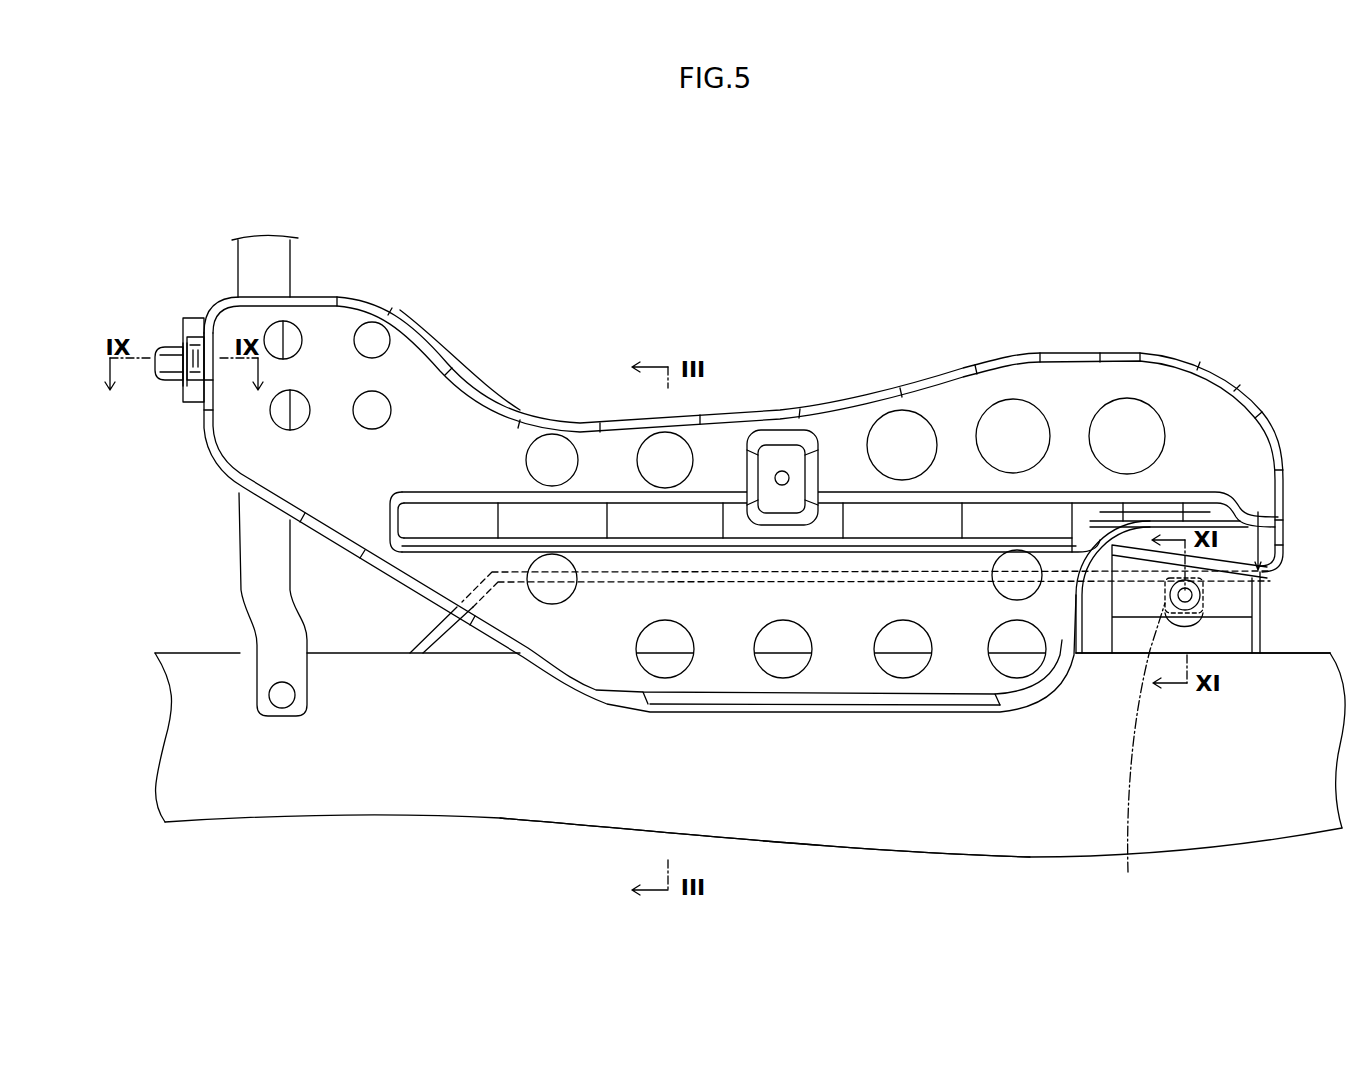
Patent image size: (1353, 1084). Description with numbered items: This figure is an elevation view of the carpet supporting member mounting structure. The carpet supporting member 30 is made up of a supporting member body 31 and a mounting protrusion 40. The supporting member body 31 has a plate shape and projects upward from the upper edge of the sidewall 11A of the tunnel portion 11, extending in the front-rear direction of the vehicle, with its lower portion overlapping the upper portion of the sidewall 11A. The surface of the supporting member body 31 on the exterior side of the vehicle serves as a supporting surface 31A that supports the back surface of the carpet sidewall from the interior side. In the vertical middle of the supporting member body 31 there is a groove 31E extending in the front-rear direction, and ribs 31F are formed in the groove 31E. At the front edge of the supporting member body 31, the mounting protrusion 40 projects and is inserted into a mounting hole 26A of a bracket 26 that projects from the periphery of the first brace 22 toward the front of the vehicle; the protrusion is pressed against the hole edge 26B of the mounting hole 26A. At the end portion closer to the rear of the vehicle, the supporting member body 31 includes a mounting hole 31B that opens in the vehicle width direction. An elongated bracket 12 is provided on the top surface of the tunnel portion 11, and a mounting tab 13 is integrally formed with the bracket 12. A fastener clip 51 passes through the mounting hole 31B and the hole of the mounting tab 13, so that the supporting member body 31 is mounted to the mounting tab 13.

The tunnel portion 11 is at (500, 733).
The sidewall 11A is at (865, 755).
The bracket 12 is at (1258, 635).
The mounting tab 13 is at (1190, 623).
The first brace 22 is at (268, 258).
The bracket 26 is at (190, 317).
The mounting hole 26A is at (203, 337).
The hole edge 26B is at (187, 343).
The carpet supporting member 30 is at (104, 414).
The supporting member body 31 is at (222, 430).
The supporting surface 31A is at (478, 457).
The mounting hole 31B is at (1200, 598).
The groove 31E is at (670, 523).
The ribs 31F is at (852, 522).
The mounting protrusion 40 is at (167, 382).
The fastener clip 51 is at (1139, 756).